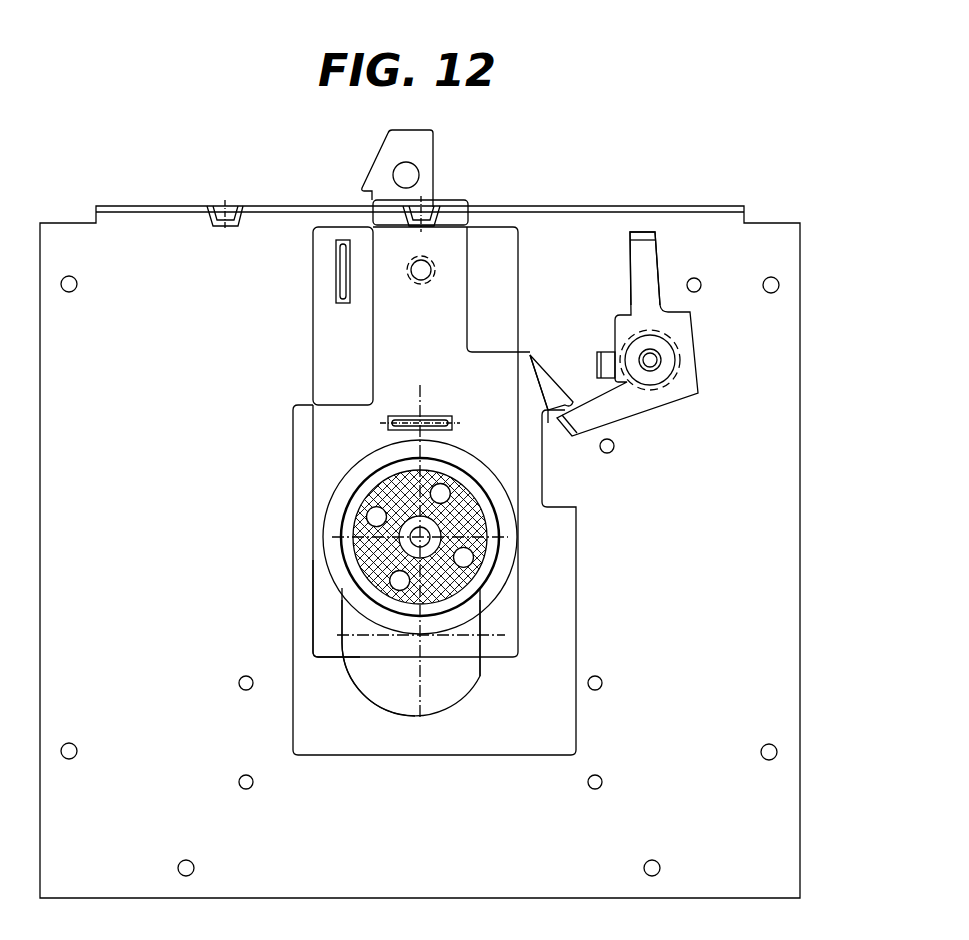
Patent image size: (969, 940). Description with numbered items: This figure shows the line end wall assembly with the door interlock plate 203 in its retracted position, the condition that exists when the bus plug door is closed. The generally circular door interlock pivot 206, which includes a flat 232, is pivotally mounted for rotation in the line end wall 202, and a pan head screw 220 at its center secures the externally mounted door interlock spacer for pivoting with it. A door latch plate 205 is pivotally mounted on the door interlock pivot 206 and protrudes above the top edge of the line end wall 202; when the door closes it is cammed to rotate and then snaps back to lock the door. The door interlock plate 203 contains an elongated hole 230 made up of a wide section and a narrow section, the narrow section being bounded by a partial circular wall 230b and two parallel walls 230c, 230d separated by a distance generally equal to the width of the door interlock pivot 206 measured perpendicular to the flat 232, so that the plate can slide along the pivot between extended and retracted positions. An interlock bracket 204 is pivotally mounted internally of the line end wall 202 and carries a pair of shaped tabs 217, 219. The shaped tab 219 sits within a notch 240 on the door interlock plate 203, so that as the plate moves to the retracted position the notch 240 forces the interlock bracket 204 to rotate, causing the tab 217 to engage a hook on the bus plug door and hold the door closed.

The line end wall 202 is at (800, 247).
The door interlock plate 203 is at (553, 375).
The interlock bracket 204 is at (697, 375).
The door latch plate 205 is at (432, 135).
The door interlock pivot 206 is at (463, 565).
The shaped tab 217 is at (660, 262).
The shaped tab 219 is at (640, 412).
The pan head screw 220 is at (370, 531).
The elongated hole 230 is at (468, 678).
The partial circular wall 230b is at (330, 705).
The parallel wall 230c is at (340, 617).
The parallel wall 230d is at (480, 672).
The flat 232 is at (478, 514).
The notch 240 is at (550, 423).